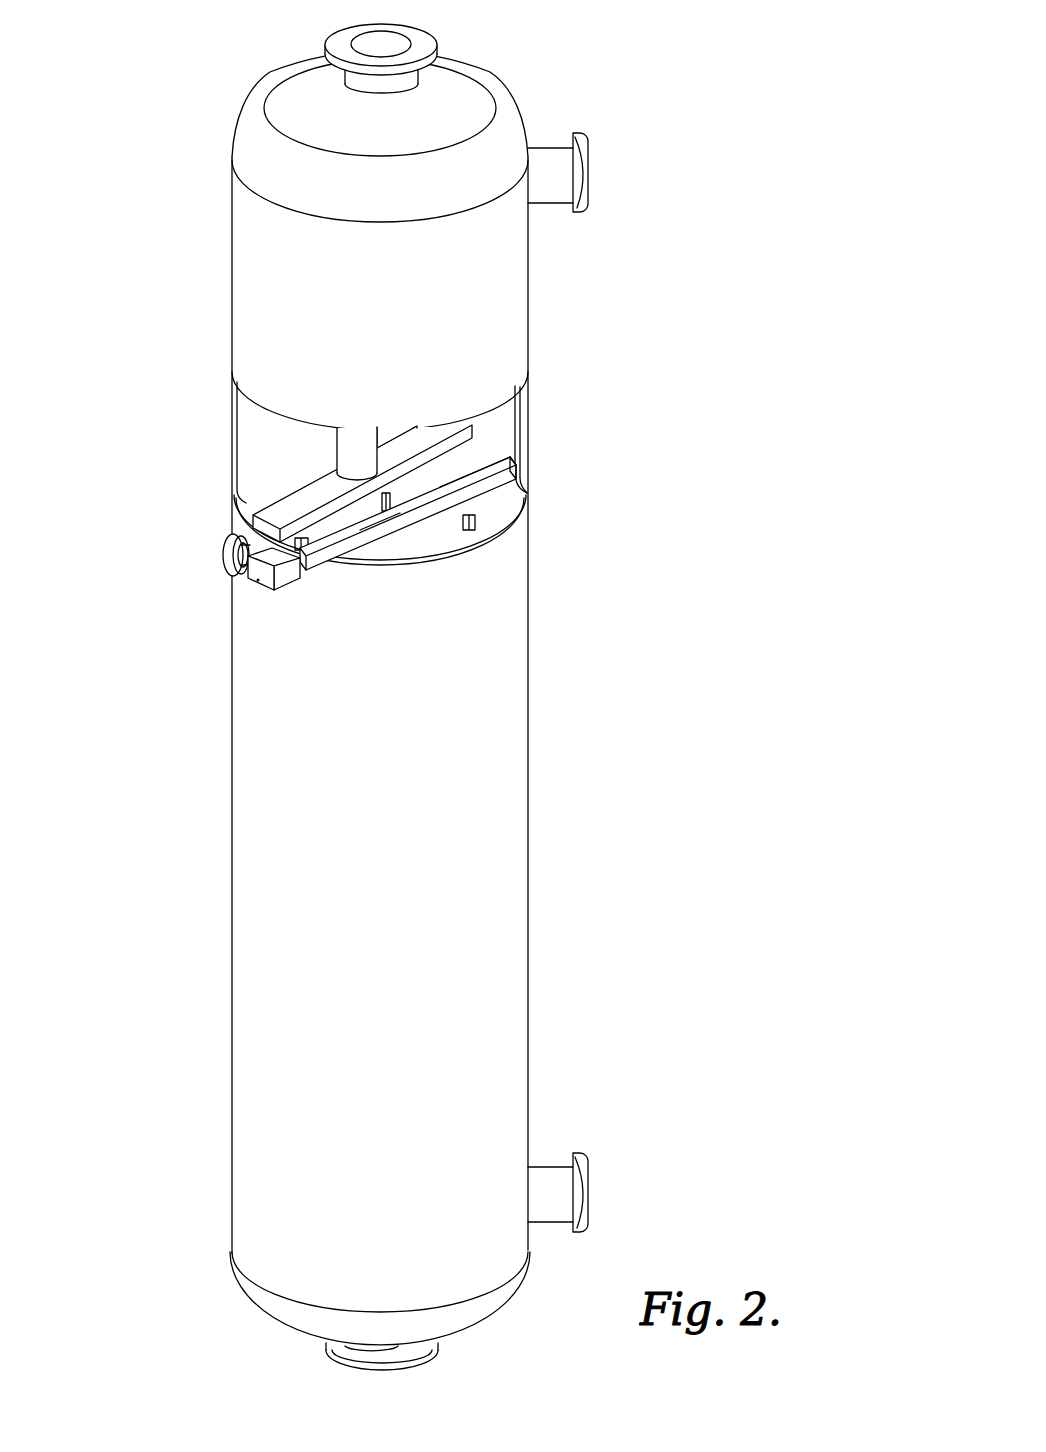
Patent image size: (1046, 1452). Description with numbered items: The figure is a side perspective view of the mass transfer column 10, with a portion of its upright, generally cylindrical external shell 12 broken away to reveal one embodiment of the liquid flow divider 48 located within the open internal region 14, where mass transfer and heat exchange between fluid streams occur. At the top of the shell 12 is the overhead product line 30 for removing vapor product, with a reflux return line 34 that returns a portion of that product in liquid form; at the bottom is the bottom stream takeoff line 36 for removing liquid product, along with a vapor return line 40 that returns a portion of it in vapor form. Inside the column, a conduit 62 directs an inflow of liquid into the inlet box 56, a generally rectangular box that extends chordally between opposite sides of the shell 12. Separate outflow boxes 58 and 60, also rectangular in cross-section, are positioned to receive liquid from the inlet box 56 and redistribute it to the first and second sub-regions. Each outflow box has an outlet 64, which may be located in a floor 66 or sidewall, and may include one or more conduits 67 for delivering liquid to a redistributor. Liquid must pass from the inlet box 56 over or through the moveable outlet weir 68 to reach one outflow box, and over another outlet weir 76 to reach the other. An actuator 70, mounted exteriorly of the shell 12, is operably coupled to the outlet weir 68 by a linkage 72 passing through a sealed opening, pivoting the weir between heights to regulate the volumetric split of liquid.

The mass transfer column 10 is at (248, 104).
The external shell 12 is at (518, 395).
The open internal region 14 is at (253, 432).
The overhead product line 30 is at (400, 43).
The reflux return line 34 is at (556, 149).
The bottom stream takeoff line 36 is at (418, 1357).
The vapor return line 40 is at (557, 1173).
The liquid flow divider 48 is at (394, 432).
The inlet box 56 is at (423, 452).
The outflow box 58 is at (330, 562).
The outflow box 60 is at (488, 457).
The conduit 62 is at (346, 443).
The outlet 64 is at (437, 497).
The floor 66 is at (372, 528).
The conduits 67 is at (455, 535).
The outlet weir 68 is at (327, 520).
The actuator 70 is at (228, 556).
The linkage 72 is at (250, 574).
The outlet weir 76 is at (485, 466).